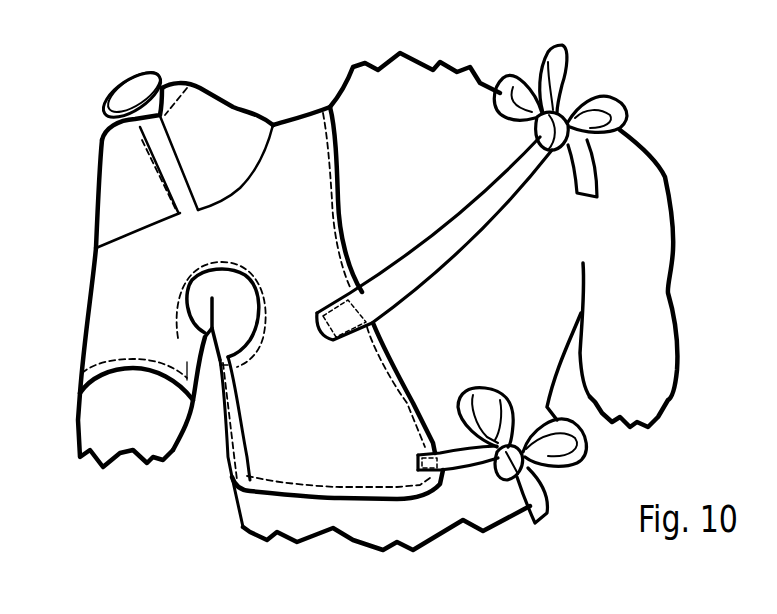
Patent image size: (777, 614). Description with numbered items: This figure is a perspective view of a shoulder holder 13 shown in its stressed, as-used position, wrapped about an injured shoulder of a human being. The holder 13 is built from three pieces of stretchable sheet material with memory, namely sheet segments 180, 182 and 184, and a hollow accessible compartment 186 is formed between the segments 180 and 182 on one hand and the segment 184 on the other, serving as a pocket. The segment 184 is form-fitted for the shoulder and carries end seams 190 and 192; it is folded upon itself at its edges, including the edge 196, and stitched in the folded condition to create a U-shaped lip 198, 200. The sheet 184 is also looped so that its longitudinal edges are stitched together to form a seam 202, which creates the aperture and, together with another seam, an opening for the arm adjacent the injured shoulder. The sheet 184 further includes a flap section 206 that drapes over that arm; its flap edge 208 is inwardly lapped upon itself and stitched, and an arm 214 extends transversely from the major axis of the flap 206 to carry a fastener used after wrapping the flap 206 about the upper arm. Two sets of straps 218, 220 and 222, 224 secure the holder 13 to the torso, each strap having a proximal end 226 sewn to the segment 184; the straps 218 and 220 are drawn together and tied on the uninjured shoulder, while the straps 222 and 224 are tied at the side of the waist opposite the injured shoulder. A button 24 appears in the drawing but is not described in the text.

The holder 13 is at (286, 95).
The button 24 is at (125, 92).
The sheet segment 180 is at (148, 199).
The sheet segment 182 is at (226, 152).
The sheet segment 184 is at (337, 454).
The compartment 186 is at (197, 82).
The end seam 190 is at (337, 205).
The end seam 192 is at (300, 494).
The edge 196 is at (347, 500).
The U-shaped lip 198 is at (247, 493).
The U-shaped lip 200 is at (330, 163).
The seam 202 is at (233, 423).
The flap section 206 is at (147, 306).
The flap edge 208 is at (80, 393).
The arm 214 is at (187, 372).
The strap 218 is at (455, 258).
The strap 220 is at (548, 67).
The strap 222 is at (477, 460).
The strap 224 is at (557, 412).
The proximal end 226 is at (373, 322).